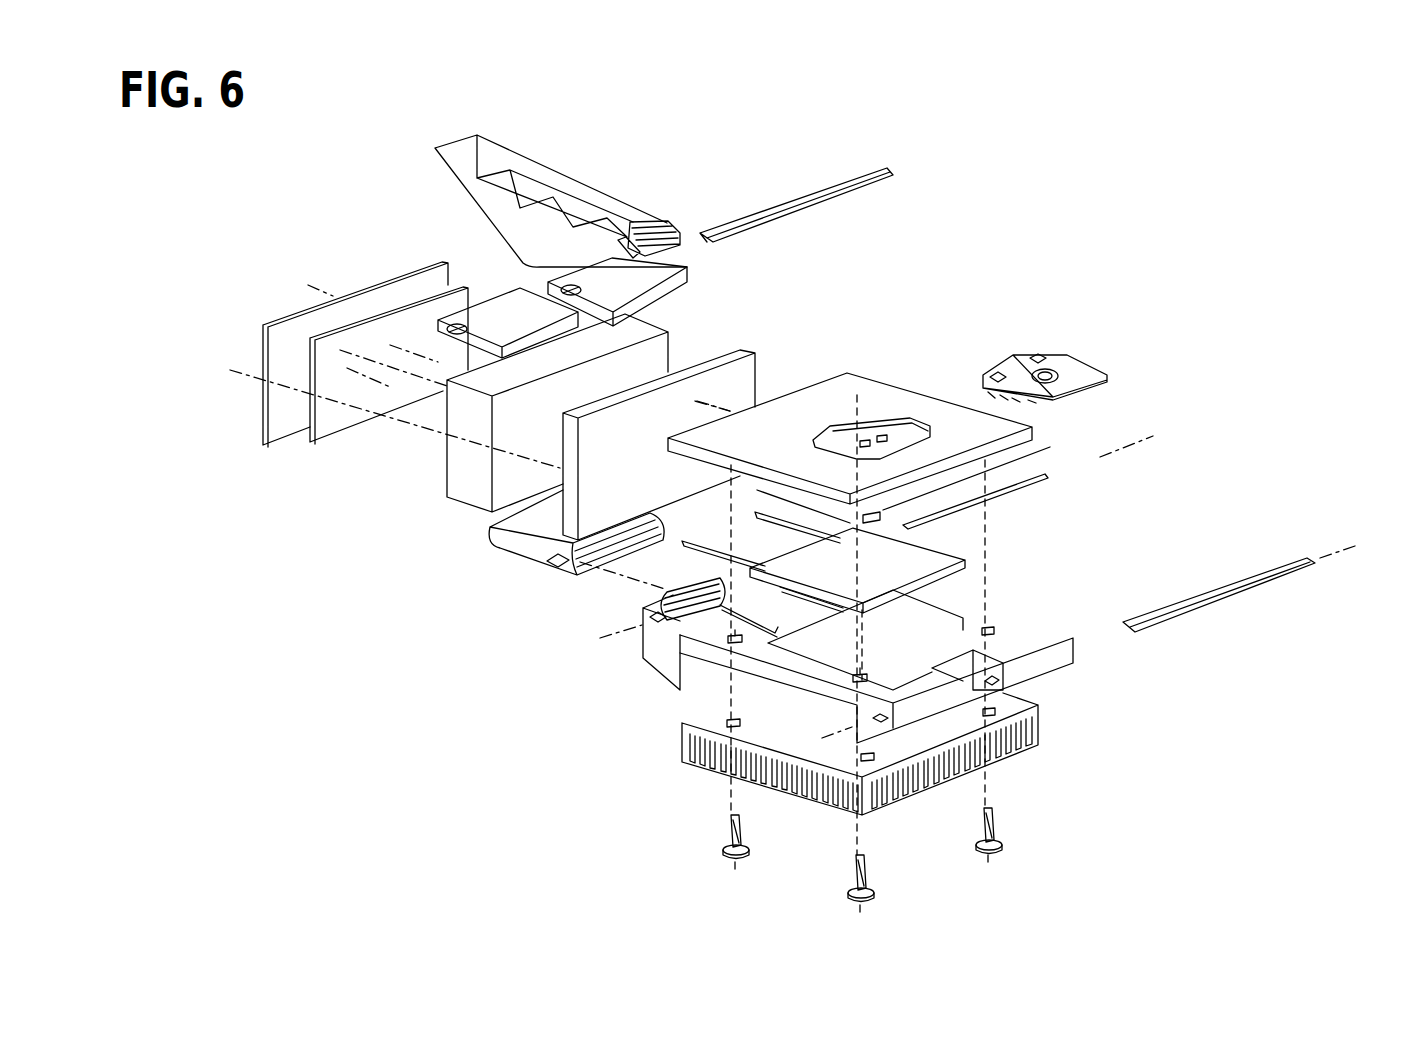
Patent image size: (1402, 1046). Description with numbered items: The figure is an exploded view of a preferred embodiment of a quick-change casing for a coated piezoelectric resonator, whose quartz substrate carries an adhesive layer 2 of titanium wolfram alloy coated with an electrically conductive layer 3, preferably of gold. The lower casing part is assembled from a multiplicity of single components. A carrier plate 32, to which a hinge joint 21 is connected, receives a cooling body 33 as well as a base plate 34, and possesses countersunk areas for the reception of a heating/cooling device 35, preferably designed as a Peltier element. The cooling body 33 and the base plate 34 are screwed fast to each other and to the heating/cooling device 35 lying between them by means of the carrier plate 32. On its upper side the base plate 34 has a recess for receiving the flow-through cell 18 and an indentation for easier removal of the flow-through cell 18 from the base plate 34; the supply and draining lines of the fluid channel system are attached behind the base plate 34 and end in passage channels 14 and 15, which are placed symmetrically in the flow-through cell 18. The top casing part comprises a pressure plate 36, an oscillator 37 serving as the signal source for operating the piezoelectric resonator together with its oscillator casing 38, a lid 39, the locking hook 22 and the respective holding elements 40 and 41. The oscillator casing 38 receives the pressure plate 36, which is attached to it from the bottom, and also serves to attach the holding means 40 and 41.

The adhesive layer 2 is at (707, 402).
The electrically conductive layer 3 is at (742, 403).
The passage channel 14 is at (865, 438).
The passage channel 15 is at (883, 437).
The flow-through cell 18 is at (1077, 372).
The hinge joint 21 is at (663, 640).
The locking hook 22 is at (575, 218).
The carrier plate 32 is at (1035, 675).
The cooling body 33 is at (1000, 730).
The base plate 34 is at (930, 403).
The heating/cooling device 35 is at (943, 553).
The pressure plate 36 is at (585, 512).
The oscillator 37 is at (333, 424).
The oscillator casing 38 is at (463, 457).
The lid 39 is at (287, 412).
The holding element 40 is at (660, 268).
The holding element 41 is at (508, 323).